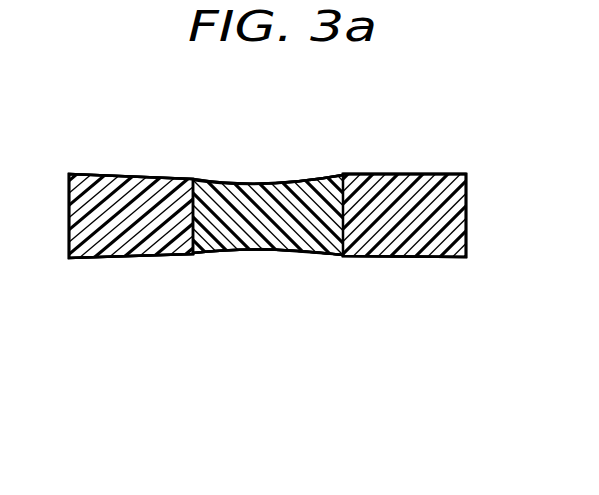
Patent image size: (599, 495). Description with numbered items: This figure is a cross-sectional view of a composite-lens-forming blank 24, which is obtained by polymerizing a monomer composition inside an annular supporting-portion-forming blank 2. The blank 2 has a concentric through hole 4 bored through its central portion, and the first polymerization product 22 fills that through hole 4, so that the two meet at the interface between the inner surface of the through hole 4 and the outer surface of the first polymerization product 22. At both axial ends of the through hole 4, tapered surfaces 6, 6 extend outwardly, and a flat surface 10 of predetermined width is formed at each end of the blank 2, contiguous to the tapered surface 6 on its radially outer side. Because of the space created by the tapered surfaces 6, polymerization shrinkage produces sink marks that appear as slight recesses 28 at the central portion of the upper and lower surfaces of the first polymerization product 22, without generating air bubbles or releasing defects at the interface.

The supporting-portion-forming blank 2 is at (438, 248).
The through hole 4 is at (197, 190).
The tapered surface 6 is at (357, 174).
The flat surface 10 is at (452, 174).
The first polymerization product 22 is at (284, 242).
The composite-lens-forming blank 24 is at (442, 129).
The recess 28 is at (270, 177).